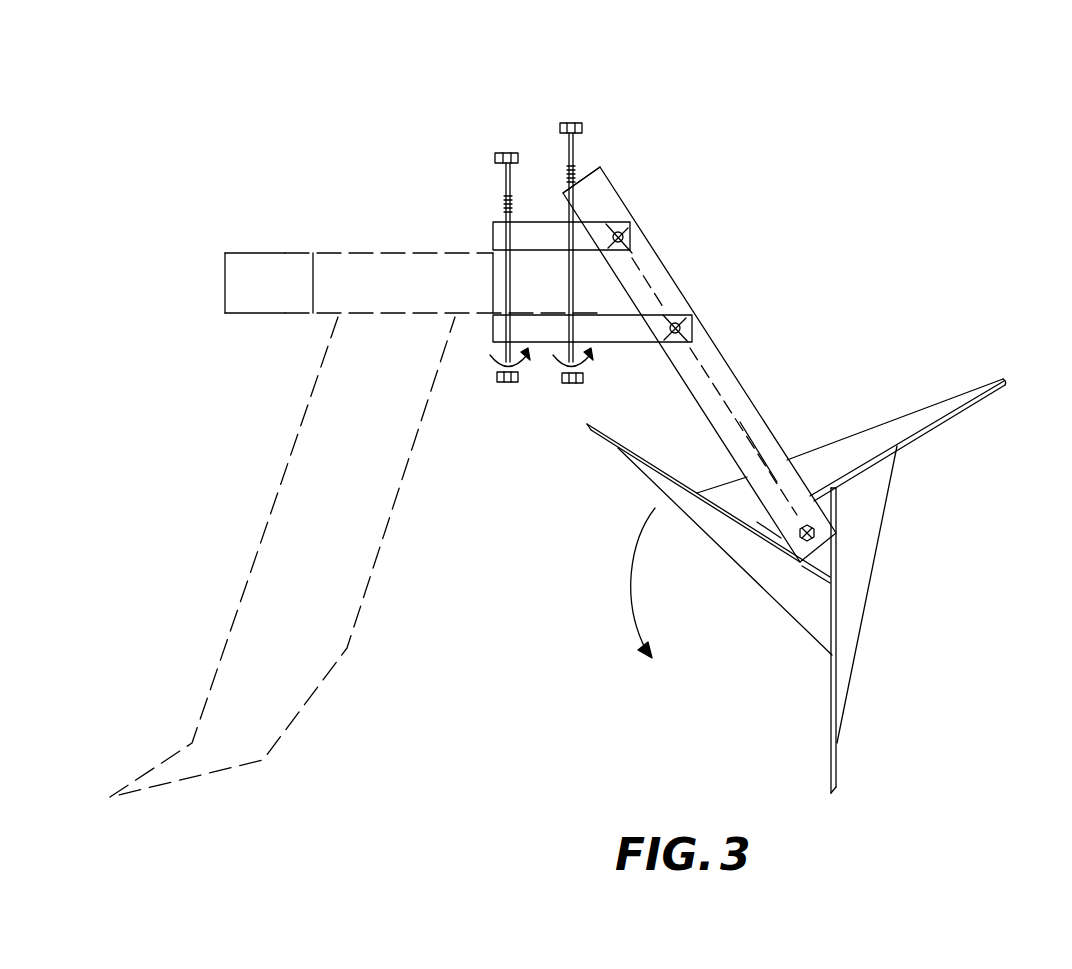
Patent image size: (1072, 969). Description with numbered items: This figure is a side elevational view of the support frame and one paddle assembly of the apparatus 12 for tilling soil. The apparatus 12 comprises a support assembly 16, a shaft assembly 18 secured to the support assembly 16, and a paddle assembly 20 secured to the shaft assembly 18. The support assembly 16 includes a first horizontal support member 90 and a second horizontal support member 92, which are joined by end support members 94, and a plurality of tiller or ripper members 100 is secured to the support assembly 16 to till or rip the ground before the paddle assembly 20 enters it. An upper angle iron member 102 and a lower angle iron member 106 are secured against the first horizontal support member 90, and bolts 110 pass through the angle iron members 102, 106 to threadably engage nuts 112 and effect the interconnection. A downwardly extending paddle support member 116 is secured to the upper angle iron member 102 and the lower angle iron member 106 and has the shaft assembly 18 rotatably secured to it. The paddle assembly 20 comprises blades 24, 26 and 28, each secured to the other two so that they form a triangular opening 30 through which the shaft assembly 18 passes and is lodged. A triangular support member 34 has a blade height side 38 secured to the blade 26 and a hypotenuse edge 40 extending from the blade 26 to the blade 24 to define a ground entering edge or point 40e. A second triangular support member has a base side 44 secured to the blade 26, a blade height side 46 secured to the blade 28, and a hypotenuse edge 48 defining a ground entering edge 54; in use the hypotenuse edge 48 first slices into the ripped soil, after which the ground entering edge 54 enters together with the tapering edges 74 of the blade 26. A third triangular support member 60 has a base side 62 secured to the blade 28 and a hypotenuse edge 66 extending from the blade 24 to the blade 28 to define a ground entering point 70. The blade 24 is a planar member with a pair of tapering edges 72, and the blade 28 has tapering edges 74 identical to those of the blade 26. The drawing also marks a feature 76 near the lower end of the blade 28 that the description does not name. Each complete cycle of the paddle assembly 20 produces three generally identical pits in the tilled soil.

The apparatus for tilling soil 12 is at (372, 205).
The support assembly 16 is at (466, 228).
The shaft assembly 18 is at (845, 497).
The paddle assembly 20 is at (804, 433).
The blade 24 is at (1000, 377).
The blade 26 is at (650, 462).
The blade 28 is at (838, 777).
The triangular opening 30 is at (845, 558).
The triangular support member 34 is at (840, 448).
The blade height side 38 is at (723, 483).
The hypotenuse edge 40 is at (897, 420).
The ground entering edge 40e is at (957, 405).
The base side 44 is at (765, 562).
The blade height side 46 is at (830, 613).
The hypotenuse edge 48 is at (680, 510).
The ground entering edge 54 is at (620, 448).
The triangular support member 60 is at (855, 613).
The base side 62 is at (837, 640).
The hypotenuse edge 66 is at (880, 510).
The ground entering edge 70 is at (837, 745).
The tapering edges 72 is at (991, 388).
The tapering edges 74 is at (597, 432).
The shank lower end 76 is at (832, 728).
The first horizontal support member 90 is at (527, 280).
The second horizontal support member 92 is at (237, 286).
The end support member 94 is at (326, 288).
The ripper member 100 is at (348, 567).
The upper angle iron member 102 is at (588, 238).
The lower angle iron member 106 is at (633, 333).
The bolt 110 is at (508, 182).
The nut 112 is at (502, 382).
The paddle support member 116 is at (645, 261).